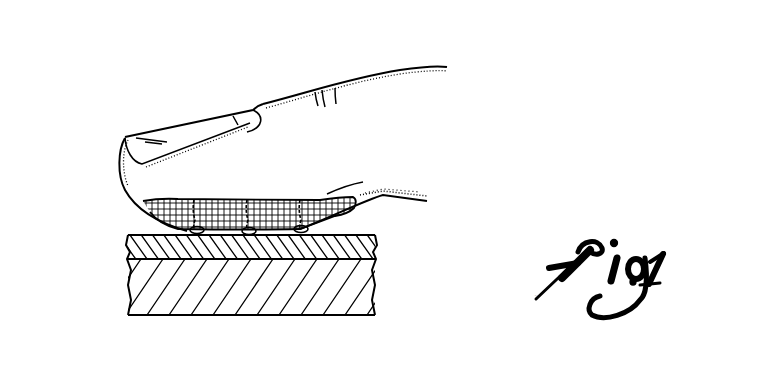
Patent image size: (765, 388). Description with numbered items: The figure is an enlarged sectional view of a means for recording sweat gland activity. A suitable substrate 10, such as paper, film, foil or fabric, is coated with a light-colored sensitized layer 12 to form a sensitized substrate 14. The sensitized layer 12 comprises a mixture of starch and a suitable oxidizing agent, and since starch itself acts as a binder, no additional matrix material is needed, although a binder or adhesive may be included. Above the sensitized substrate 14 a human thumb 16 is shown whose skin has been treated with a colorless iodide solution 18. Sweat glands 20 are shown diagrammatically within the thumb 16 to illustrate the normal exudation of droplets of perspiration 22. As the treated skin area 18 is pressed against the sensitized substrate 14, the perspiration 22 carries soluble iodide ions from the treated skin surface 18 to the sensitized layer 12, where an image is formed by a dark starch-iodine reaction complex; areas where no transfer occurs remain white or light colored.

The substrate 10 is at (365, 297).
The sensitized layer 12 is at (375, 242).
The sensitized substrate 14 is at (112, 286).
The human thumb 16 is at (363, 87).
The colorless iodide solution 18 is at (387, 194).
The sweat glands 20 is at (303, 200).
The droplets of perspiration 22 is at (217, 198).